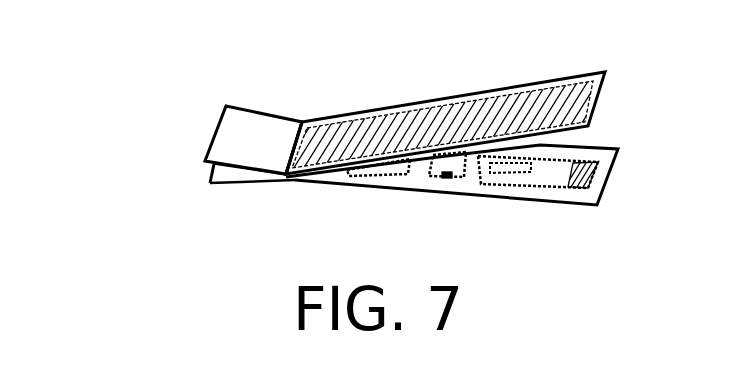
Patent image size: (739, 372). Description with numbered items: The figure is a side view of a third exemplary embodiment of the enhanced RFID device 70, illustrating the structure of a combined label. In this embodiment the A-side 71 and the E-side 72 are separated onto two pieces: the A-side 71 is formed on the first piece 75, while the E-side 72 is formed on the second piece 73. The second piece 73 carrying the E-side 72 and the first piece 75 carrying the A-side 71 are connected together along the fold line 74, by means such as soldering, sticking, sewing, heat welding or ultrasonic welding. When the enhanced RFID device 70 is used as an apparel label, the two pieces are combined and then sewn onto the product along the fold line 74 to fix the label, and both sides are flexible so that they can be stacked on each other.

The enhanced RFID device 70 is at (128, 83).
The A-side 71 is at (473, 186).
The E-side 72 is at (394, 110).
The second piece 73 is at (227, 130).
The fold line 74 is at (295, 148).
The first piece 75 is at (235, 176).